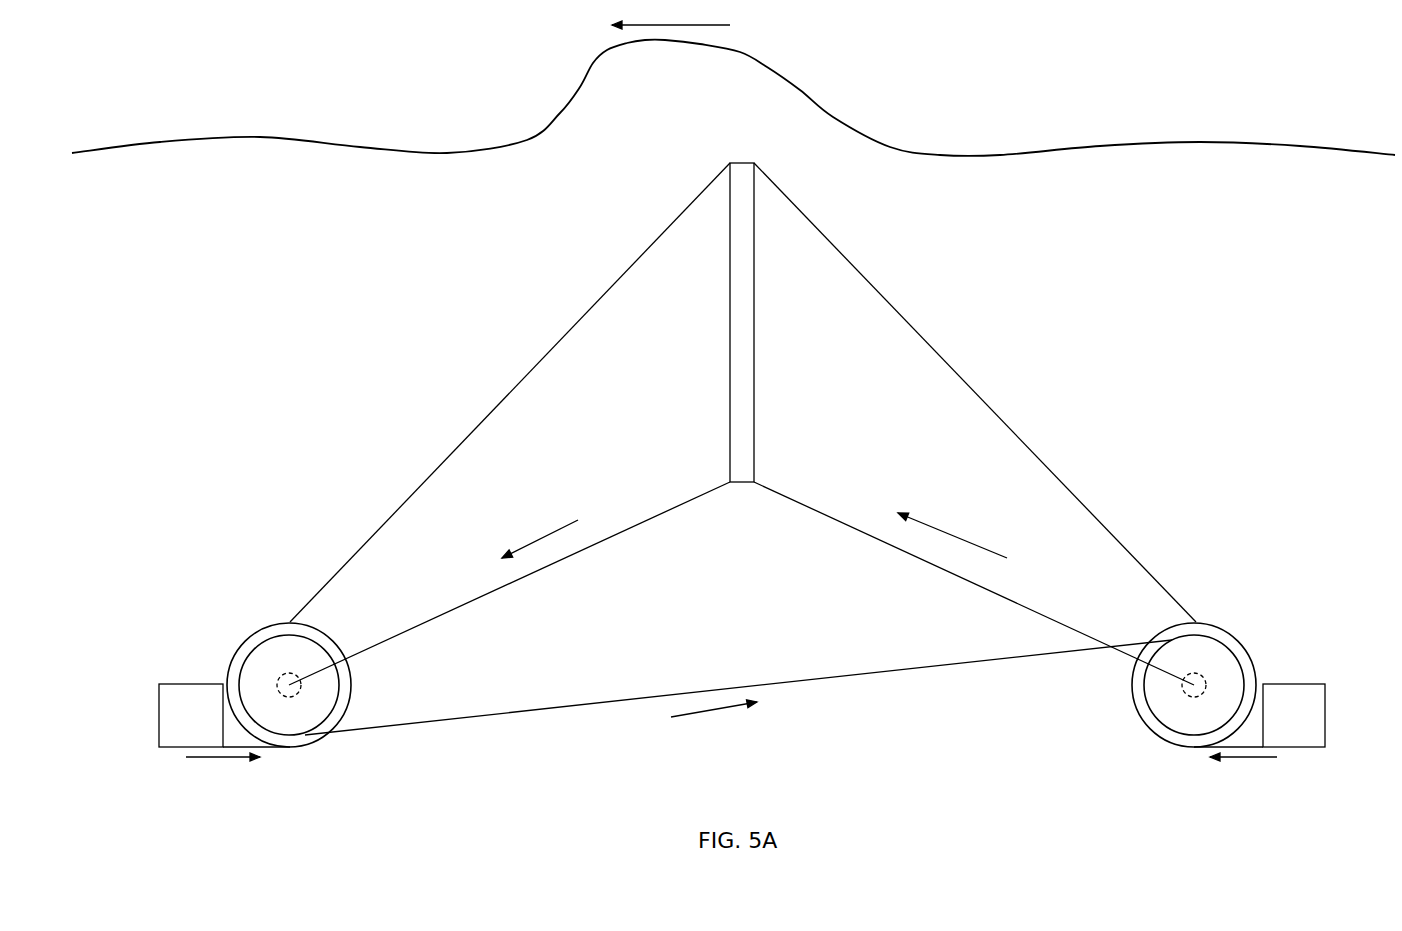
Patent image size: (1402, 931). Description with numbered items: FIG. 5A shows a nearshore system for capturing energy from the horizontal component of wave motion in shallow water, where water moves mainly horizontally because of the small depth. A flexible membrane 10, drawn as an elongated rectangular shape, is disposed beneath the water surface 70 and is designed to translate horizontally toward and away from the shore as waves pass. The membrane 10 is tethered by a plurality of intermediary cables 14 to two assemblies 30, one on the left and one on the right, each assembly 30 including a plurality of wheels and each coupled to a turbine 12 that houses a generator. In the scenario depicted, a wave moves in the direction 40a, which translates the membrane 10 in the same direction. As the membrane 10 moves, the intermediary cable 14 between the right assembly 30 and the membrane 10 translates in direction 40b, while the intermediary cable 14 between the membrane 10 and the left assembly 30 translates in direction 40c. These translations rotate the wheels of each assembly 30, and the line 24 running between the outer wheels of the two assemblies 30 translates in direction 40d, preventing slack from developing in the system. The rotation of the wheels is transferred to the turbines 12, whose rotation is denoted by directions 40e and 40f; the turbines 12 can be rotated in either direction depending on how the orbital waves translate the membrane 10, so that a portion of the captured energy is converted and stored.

The flexible membrane 10 is at (733, 333).
The turbine 12 is at (187, 695).
The intermediary cable 14 is at (547, 353).
The lower connecting cable 24 is at (773, 682).
The assembly 30 is at (262, 615).
The wave motion direction 40a is at (665, 25).
The translation direction of intermediary line 40b is at (948, 533).
The translation direction of intermediary line 40c is at (547, 535).
The translation direction of intermediary line 40d is at (715, 707).
The turbine rotation direction 40e is at (213, 758).
The turbine rotation direction 40f is at (1248, 757).
The surface 70 is at (1170, 143).